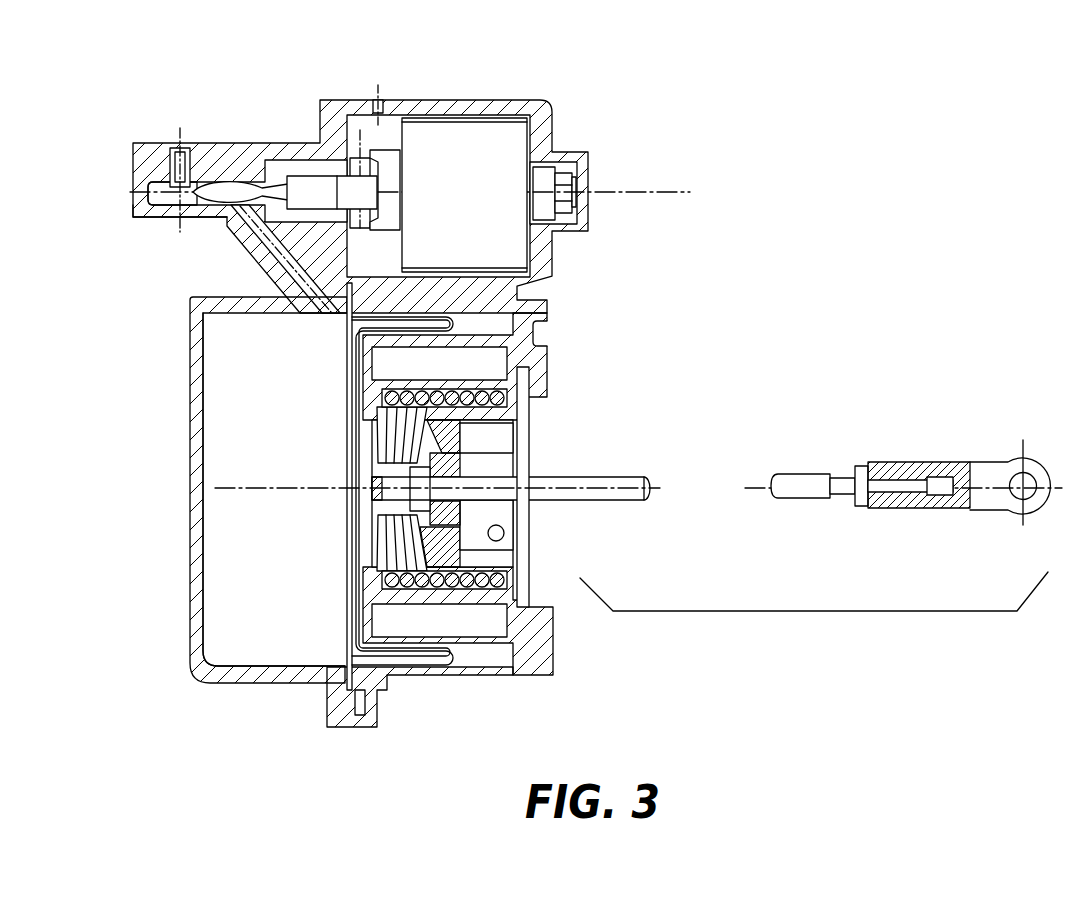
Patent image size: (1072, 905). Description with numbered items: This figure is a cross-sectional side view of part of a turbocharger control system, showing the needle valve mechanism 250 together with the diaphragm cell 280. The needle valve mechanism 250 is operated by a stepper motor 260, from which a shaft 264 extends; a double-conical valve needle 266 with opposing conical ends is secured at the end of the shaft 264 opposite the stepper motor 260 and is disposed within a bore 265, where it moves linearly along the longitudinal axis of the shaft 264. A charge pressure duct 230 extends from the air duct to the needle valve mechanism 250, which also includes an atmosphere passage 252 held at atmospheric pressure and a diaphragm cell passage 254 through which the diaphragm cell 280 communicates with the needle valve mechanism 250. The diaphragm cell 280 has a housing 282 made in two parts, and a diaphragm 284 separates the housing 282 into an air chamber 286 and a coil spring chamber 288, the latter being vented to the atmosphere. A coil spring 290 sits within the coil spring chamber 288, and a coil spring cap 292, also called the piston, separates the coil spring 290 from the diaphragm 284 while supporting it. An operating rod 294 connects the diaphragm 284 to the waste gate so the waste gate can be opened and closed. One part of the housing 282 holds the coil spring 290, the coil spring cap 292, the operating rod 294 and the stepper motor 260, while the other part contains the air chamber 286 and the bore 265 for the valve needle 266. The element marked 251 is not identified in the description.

The charge pressure duct 230 is at (172, 139).
The needle valve mechanism 250 is at (603, 118).
The valve seat 251 is at (157, 218).
The atmosphere passage 252 is at (380, 123).
The diaphragm cell passage 254 is at (267, 260).
The stepper motor 260 is at (512, 124).
The shaft 264 is at (310, 183).
The bore 265 is at (163, 198).
The valve needle 266 is at (240, 177).
The diaphragm cell 280 is at (165, 603).
The housing 282 is at (210, 678).
The diaphragm 284 is at (327, 695).
The air chamber 286 is at (228, 387).
The coil spring chamber 288 is at (503, 322).
The coil spring 290 is at (462, 588).
The coil spring cap 292 is at (410, 640).
The operating rod 294 is at (798, 502).